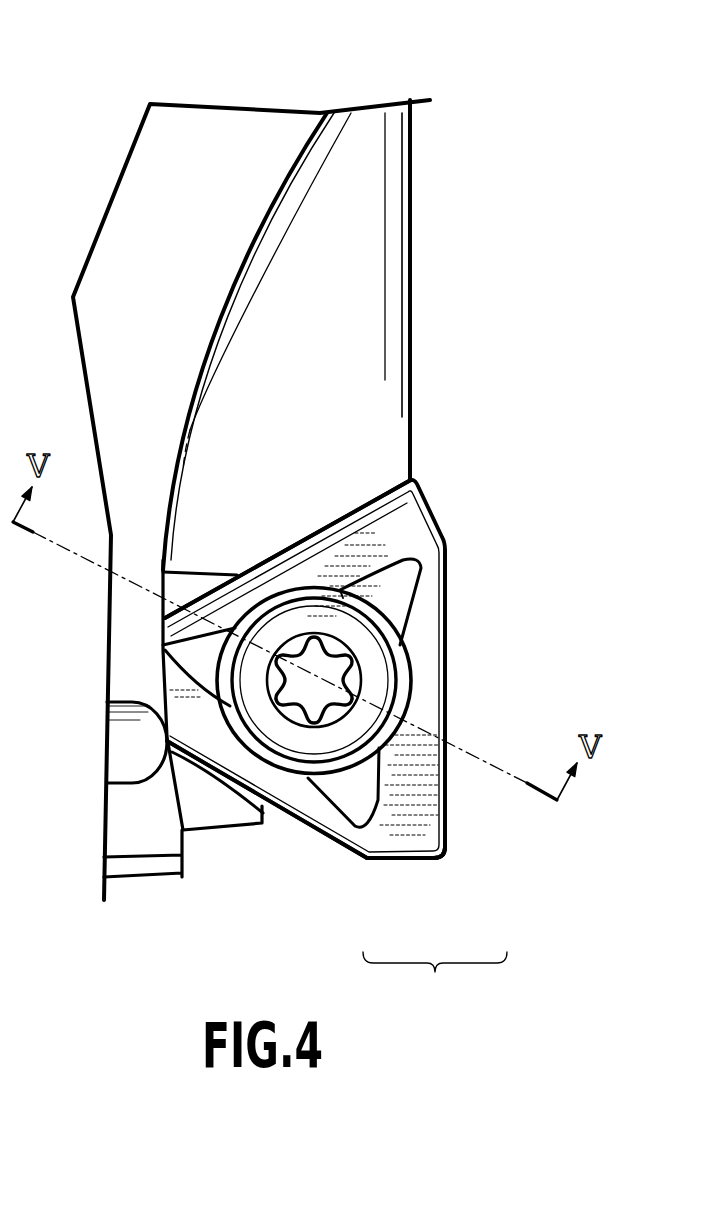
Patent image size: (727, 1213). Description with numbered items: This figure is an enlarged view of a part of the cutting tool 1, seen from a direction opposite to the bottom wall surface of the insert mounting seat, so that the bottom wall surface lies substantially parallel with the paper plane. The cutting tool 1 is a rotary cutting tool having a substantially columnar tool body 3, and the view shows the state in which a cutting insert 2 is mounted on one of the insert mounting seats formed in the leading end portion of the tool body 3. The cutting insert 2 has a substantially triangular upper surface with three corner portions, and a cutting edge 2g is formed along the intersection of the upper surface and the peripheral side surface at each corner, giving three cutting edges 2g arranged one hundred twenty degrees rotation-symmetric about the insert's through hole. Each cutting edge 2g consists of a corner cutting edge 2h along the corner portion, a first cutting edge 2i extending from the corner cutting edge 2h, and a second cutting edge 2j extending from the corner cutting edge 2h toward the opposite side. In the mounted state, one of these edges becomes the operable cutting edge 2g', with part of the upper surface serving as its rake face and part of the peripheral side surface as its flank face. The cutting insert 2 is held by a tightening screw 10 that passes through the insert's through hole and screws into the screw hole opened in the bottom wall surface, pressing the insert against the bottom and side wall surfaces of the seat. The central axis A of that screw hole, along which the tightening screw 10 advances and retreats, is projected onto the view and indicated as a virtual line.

The cutting tool 1 is at (227, 137).
The cutting insert 2 is at (400, 528).
The tool body 3 is at (365, 138).
The cutting edge 2g is at (332, 680).
The operable cutting edge 2g' is at (435, 986).
The corner cutting edge 2h is at (440, 863).
The first cutting edge 2i is at (448, 837).
The second cutting edge 2j is at (405, 863).
The tightening screw 10 is at (400, 667).
The central axis of the screw hole A is at (508, 773).